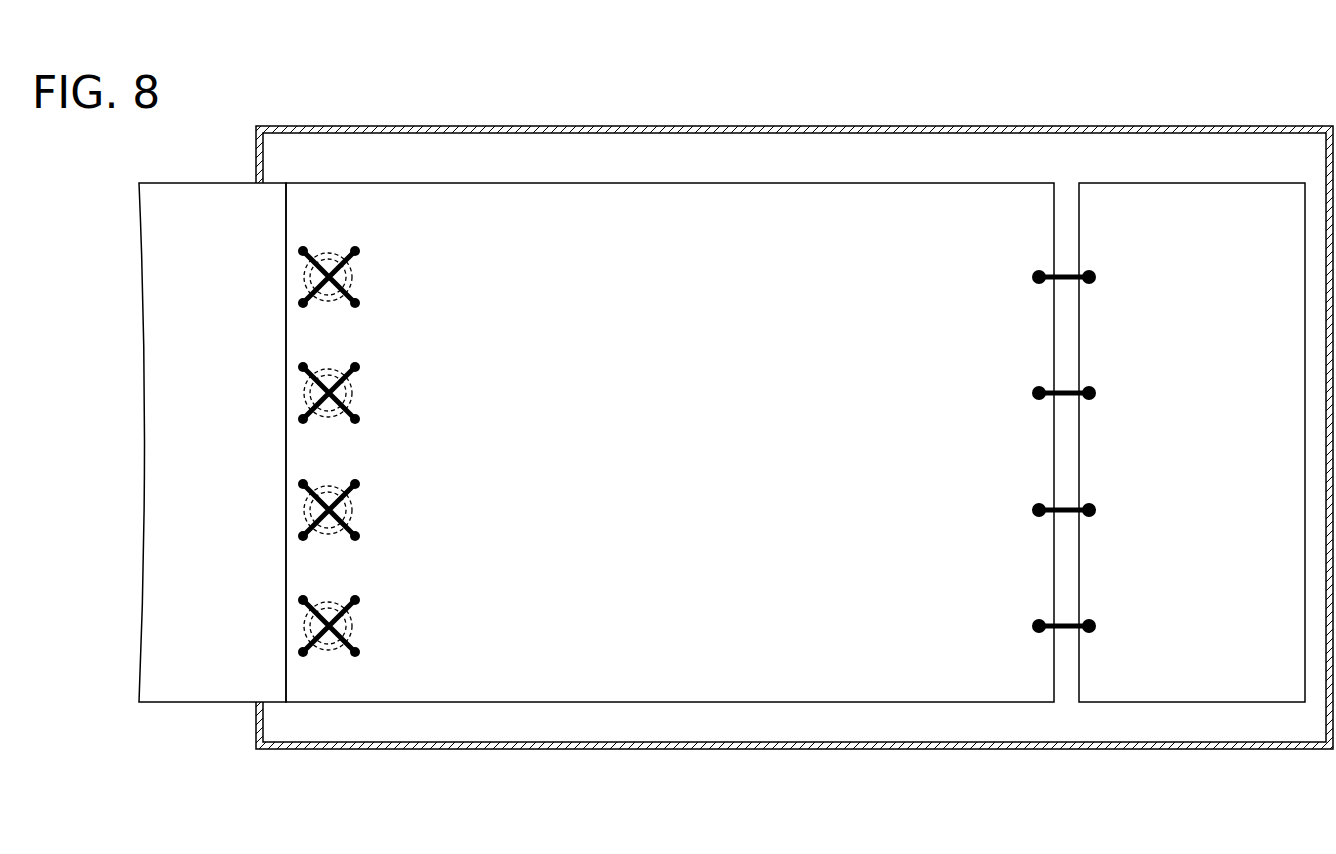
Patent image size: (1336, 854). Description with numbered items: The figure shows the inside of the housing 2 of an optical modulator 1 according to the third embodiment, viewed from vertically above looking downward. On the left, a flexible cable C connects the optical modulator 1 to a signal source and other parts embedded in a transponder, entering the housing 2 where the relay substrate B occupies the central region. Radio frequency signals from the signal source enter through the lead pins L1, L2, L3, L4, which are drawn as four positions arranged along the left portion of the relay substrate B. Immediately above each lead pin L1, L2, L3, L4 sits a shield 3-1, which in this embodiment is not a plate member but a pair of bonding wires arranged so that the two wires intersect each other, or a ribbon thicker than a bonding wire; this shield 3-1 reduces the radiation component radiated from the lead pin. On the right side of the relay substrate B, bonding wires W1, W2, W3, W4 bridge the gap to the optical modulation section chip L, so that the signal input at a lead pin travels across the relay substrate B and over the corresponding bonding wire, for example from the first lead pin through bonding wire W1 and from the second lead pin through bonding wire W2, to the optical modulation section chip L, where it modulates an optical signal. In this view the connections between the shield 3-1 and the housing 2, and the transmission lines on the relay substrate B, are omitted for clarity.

The optical modulator 1 is at (736, 396).
The housing 2 is at (560, 128).
The relay substrate B is at (380, 200).
The flexible cable C is at (203, 692).
The optical modulation section chip L is at (1230, 182).
The lead pin L1 is at (353, 628).
The lead pin L2 is at (353, 512).
The lead pin L3 is at (353, 395).
The lead pin L4 is at (353, 279).
The shield 3-1 is at (348, 294).
The bonding wire W1 is at (1068, 624).
The bonding wire W2 is at (1068, 508).
The bonding wire W3 is at (1068, 391).
The bonding wire W4 is at (1068, 275).